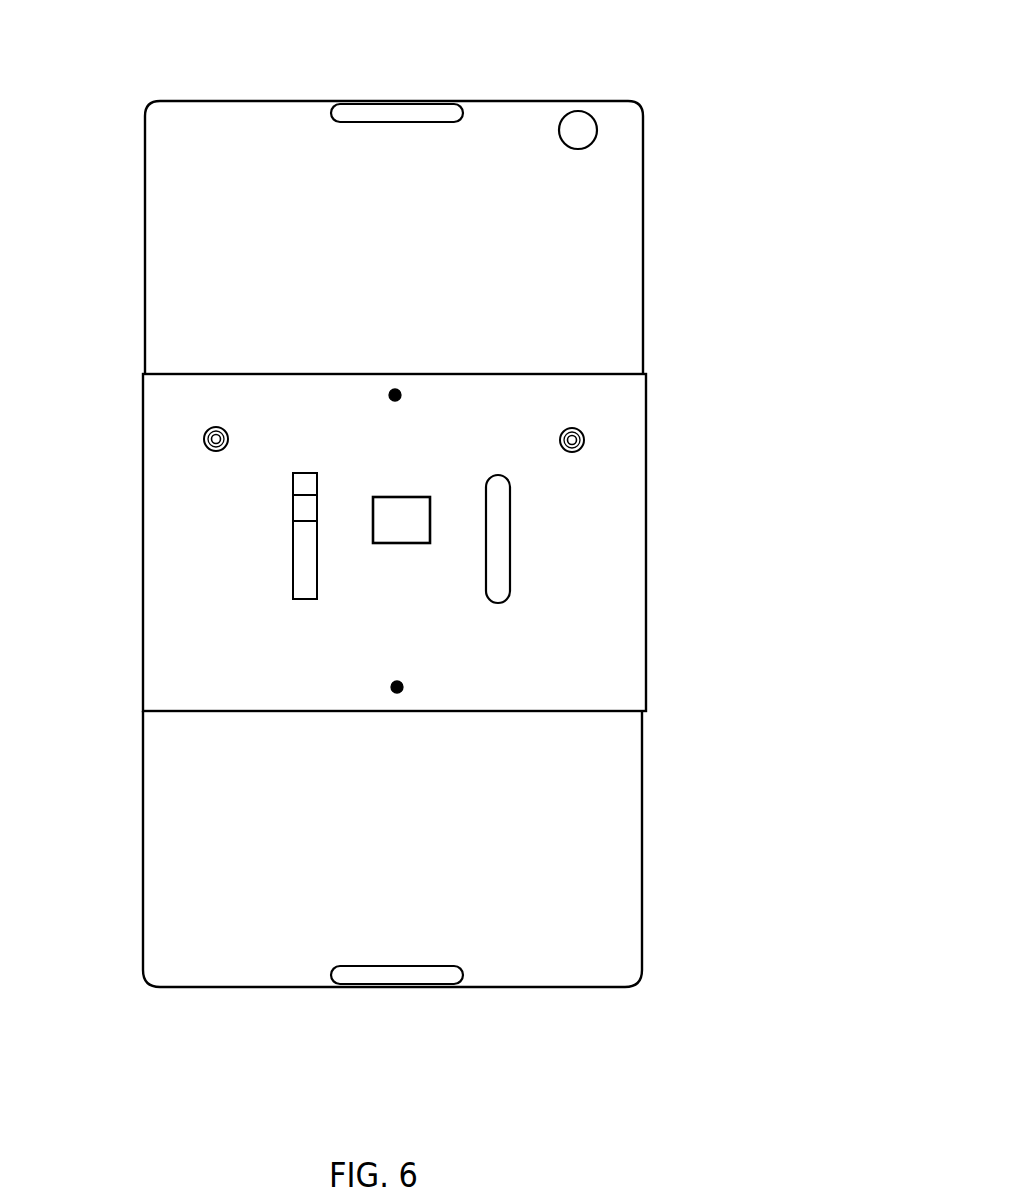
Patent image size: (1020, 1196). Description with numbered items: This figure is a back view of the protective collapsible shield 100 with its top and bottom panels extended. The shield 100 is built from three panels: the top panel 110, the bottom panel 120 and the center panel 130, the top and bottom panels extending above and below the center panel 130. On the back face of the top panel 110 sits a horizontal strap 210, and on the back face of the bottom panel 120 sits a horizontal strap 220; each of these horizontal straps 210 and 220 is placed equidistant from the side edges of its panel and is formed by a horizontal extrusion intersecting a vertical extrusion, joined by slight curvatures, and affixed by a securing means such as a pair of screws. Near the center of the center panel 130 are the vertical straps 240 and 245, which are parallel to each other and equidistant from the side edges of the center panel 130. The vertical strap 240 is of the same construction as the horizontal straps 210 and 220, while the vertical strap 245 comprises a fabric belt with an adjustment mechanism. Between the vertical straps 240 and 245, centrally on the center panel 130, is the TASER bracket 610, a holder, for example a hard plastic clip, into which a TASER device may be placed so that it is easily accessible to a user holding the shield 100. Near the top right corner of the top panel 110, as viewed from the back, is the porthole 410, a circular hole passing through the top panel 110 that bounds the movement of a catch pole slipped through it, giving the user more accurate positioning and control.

The shield 100 is at (381, 522).
The top panel 110 is at (172, 257).
The bottom panel 120 is at (172, 830).
The center panel 130 is at (172, 562).
The horizontal strap 210 is at (413, 117).
The horizontal strap 220 is at (388, 970).
The vertical strap 240 is at (500, 533).
The vertical strap 245 is at (302, 532).
The porthole 410 is at (585, 137).
The TASER bracket 610 is at (410, 507).